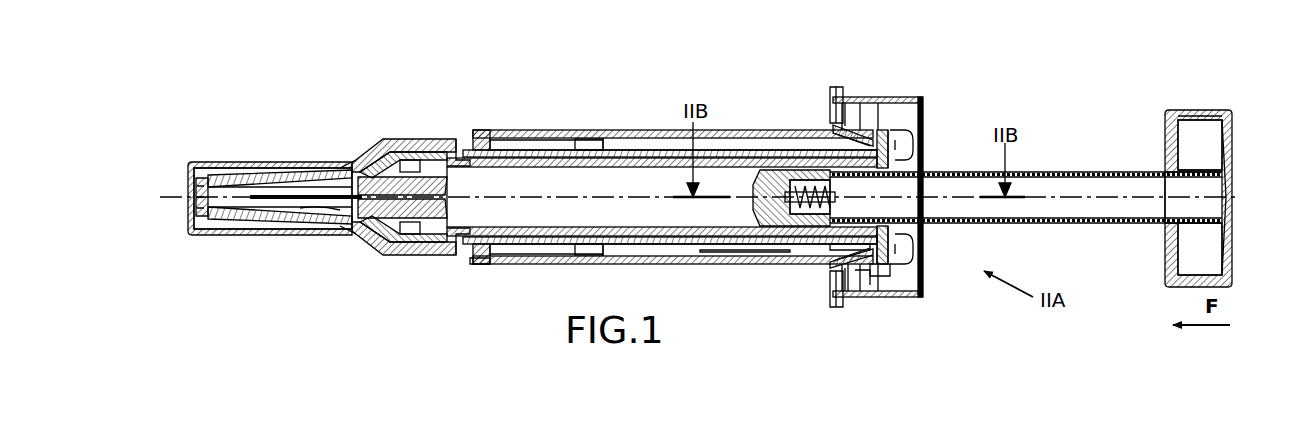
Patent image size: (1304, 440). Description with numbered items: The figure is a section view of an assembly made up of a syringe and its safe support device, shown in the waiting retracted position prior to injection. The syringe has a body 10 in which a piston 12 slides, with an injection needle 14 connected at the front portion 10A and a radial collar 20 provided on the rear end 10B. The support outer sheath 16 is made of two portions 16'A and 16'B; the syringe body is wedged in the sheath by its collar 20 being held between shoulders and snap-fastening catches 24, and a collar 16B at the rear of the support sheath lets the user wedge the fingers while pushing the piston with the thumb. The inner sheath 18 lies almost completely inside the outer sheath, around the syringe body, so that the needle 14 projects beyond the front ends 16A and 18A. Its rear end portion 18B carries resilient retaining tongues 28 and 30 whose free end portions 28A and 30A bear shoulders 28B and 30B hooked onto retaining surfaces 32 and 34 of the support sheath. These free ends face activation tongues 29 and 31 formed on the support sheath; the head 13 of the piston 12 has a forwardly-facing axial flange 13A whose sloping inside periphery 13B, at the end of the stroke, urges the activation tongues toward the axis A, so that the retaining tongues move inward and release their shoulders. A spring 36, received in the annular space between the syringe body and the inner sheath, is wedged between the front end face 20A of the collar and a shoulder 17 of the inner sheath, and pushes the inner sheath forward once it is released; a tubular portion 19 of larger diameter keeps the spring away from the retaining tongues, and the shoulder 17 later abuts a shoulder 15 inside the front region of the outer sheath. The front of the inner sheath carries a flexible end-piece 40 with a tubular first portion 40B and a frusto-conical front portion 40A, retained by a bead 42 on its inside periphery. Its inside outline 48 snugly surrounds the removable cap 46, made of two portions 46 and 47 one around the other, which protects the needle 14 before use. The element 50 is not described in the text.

The syringe body 10 is at (730, 132).
The front portion of the syringe body 10A is at (328, 160).
The rear end of the syringe body 10B is at (893, 286).
The piston 12 is at (1062, 182).
The head of the piston 13 is at (1242, 106).
The forwardly-facing axial flange 13A is at (1196, 110).
The inside periphery of the axial flange 13B is at (1165, 122).
The injection needle 14 is at (262, 192).
The shoulder of the outer sheath 15 is at (488, 265).
The support outer sheath 16 is at (675, 152).
The front end of the support sheath 16A is at (476, 128).
The front portion of the support sheath 16'A is at (546, 162).
The collar of the support sheath 16B is at (926, 98).
The rear portion of the support sheath 16'B is at (920, 161).
The shoulder of the inner sheath 17 is at (722, 250).
The inner sheath 18 is at (593, 139).
The front end of the inner sheath 18A is at (350, 160).
The rear end portion of the inner sheath 18B is at (834, 98).
The tubular portion of the inner sheath 19 is at (560, 152).
The radial collar 20 is at (906, 130).
The front end face of the collar 20A is at (872, 104).
The snap-fastening catches 24 is at (912, 135).
The retaining tongue 28 is at (875, 220).
The free end portion of the retaining tongue 28A is at (842, 96).
The shoulder of the retaining tongue 28B is at (838, 128).
The activation tongue 29 is at (892, 104).
The retaining tongue 30 is at (846, 222).
The free end portion of the retaining tongue 30A is at (850, 275).
The shoulder of the retaining tongue 30B is at (828, 275).
The activation tongue 31 is at (862, 272).
The retaining surface 32 is at (833, 118).
The retaining surface 34 is at (800, 252).
The spring 36 is at (760, 245).
The flexible end-piece 40 is at (405, 139).
The front portion of the end-piece 40A is at (365, 252).
The first portion of the end-piece 40B is at (448, 258).
The bead 42 is at (412, 258).
The cap 46 is at (255, 236).
The cap portion 47 is at (216, 236).
The inside outline of the end-piece 48 is at (322, 214).
The needle shield 50 is at (205, 162).
The axis A is at (168, 200).